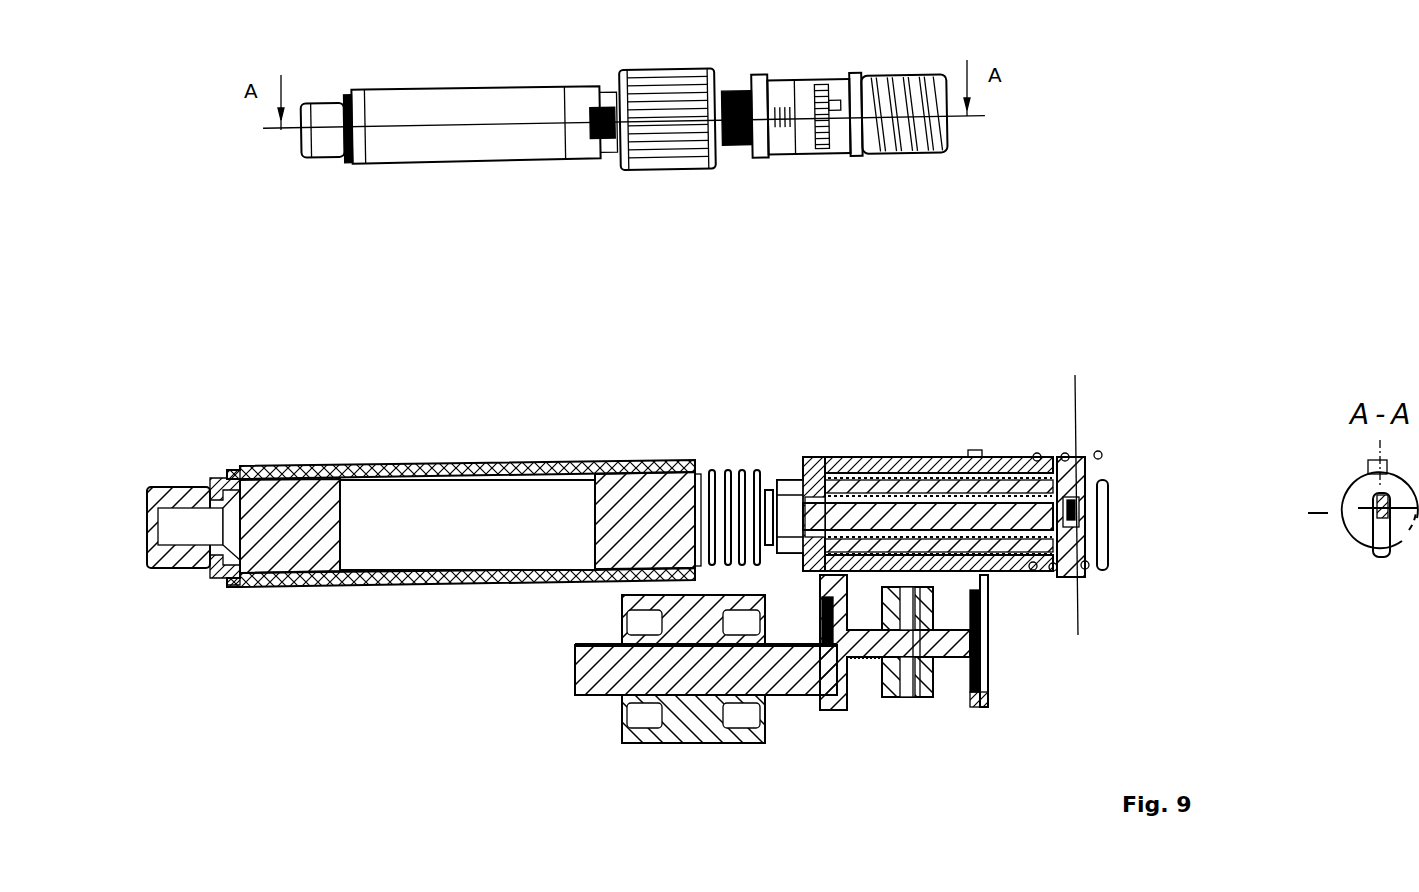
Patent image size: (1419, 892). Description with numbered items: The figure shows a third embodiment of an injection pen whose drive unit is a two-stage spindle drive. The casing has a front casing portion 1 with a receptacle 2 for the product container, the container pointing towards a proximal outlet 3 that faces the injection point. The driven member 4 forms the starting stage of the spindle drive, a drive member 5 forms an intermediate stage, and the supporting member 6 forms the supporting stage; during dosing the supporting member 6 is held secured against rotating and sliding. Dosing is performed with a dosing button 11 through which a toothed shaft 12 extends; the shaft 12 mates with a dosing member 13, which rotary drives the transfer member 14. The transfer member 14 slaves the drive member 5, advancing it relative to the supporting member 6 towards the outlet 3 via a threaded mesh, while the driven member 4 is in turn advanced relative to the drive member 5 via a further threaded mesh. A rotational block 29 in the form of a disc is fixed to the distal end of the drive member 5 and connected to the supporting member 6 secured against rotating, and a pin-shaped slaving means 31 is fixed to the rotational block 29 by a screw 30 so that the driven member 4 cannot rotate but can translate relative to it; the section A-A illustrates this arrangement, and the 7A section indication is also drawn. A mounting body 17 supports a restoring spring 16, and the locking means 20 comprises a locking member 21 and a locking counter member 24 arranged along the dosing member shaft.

The front casing portion 1 is at (418, 152).
The receptacle 2 is at (327, 500).
The proximal outlet 3 is at (288, 138).
The driven member 4 is at (858, 467).
The drive member 5 is at (888, 467).
The supporting member 6 is at (928, 467).
The section line 7A is at (982, 450).
The dosing button 11 is at (650, 167).
The shaft 12 is at (582, 695).
The dosing member 13 is at (763, 153).
The transfer member 14 is at (825, 457).
The restoring spring 16 is at (967, 684).
The mounting body 17 is at (987, 710).
The locking means 20 is at (813, 167).
The locking member 21 is at (933, 695).
The locking counter member 24 is at (897, 700).
The rotational block 29 is at (1077, 505).
The screw 30 is at (1110, 483).
The slaving means 31 is at (1072, 520).